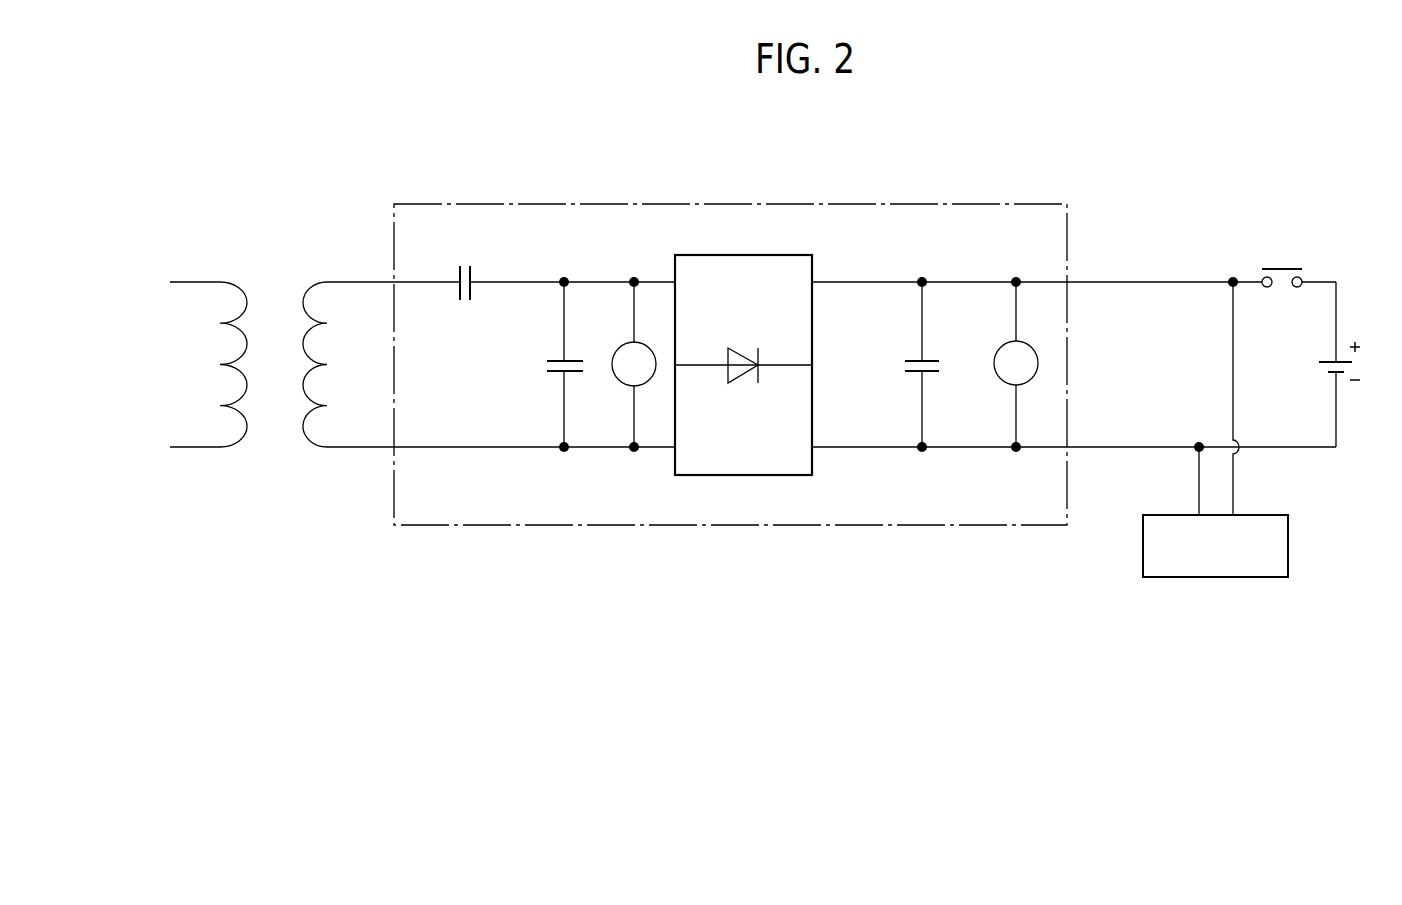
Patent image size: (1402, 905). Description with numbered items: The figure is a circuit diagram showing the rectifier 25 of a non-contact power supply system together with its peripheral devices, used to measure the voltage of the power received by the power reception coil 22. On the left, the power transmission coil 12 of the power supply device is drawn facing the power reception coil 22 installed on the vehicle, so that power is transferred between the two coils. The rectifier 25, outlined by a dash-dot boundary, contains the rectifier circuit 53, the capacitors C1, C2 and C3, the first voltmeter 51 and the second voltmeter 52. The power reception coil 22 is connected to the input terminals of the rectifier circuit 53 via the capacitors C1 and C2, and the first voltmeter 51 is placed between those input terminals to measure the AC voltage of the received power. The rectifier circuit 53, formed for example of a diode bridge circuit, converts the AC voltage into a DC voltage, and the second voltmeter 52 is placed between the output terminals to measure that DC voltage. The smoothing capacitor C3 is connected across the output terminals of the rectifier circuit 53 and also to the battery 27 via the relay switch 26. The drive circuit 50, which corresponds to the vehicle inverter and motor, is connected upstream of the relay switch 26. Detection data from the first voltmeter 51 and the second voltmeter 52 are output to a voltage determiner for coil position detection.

The power transmission coil 12 is at (240, 290).
The power reception coil 22 is at (307, 391).
The rectifier 25 is at (970, 204).
The relay switch 26 is at (1277, 268).
The battery 27 is at (1322, 362).
The drive circuit 50 is at (1290, 546).
The first voltmeter 51 is at (614, 379).
The second voltmeter 52 is at (1000, 379).
The rectifier circuit 53 is at (761, 256).
The capacitor C1 is at (473, 272).
The capacitor C2 is at (556, 360).
The smoothing capacitor C3 is at (912, 360).